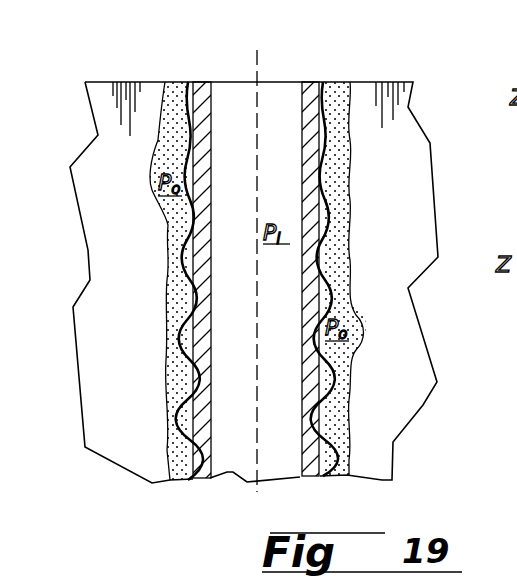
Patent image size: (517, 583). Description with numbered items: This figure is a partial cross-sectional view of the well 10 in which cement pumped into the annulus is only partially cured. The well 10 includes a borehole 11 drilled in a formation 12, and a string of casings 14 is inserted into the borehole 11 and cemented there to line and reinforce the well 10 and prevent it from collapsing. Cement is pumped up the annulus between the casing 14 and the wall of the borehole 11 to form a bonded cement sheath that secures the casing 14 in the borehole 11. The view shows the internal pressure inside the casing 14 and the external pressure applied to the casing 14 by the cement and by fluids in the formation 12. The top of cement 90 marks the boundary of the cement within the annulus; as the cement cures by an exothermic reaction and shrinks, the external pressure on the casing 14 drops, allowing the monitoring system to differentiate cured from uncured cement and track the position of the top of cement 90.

The well 10 is at (292, 60).
The borehole 11 is at (348, 290).
The formation 12 is at (131, 204).
The casing 14 is at (241, 132).
The top of cement 90 is at (174, 258).